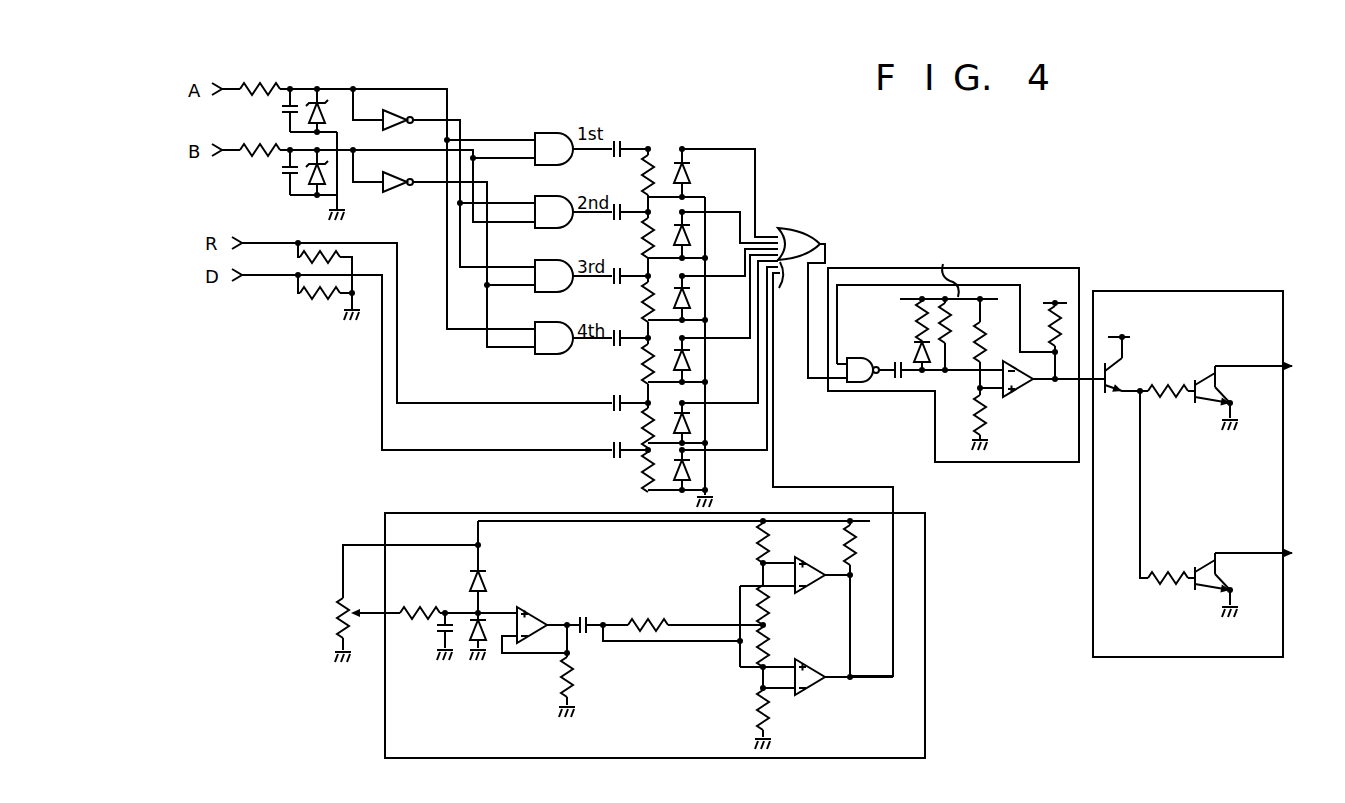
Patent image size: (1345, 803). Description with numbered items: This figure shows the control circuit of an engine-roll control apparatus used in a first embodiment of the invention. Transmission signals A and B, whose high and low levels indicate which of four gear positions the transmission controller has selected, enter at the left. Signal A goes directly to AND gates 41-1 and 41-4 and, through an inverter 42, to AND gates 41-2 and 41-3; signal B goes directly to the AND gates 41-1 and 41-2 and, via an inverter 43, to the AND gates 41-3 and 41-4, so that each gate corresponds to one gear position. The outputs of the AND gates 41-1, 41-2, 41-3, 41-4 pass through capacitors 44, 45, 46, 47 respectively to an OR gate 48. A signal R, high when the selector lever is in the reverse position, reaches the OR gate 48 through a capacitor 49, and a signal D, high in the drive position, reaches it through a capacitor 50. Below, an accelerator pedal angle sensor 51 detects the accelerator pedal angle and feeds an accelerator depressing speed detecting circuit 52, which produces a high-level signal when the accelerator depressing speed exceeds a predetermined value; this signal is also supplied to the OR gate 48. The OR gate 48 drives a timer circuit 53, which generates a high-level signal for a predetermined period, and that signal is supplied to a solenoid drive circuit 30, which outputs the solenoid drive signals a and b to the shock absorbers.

The solenoid drive circuit 30 is at (1226, 290).
The AND gate 41-1 is at (546, 133).
The AND gate 41-2 is at (546, 197).
The AND gate 41-3 is at (546, 261).
The AND gate 41-4 is at (546, 325).
The inverter 42 is at (399, 114).
The inverter 43 is at (399, 176).
The capacitor 44 is at (624, 144).
The capacitor 45 is at (623, 205).
The capacitor 46 is at (623, 272).
The capacitor 47 is at (623, 328).
The OR gate 48 is at (816, 236).
The capacitor 49 is at (608, 400).
The capacitor 50 is at (613, 448).
The accelerator pedal angle sensor 51 is at (335, 614).
The accelerator depressing speed detecting circuit 52 is at (920, 510).
The timer circuit 53 is at (993, 268).